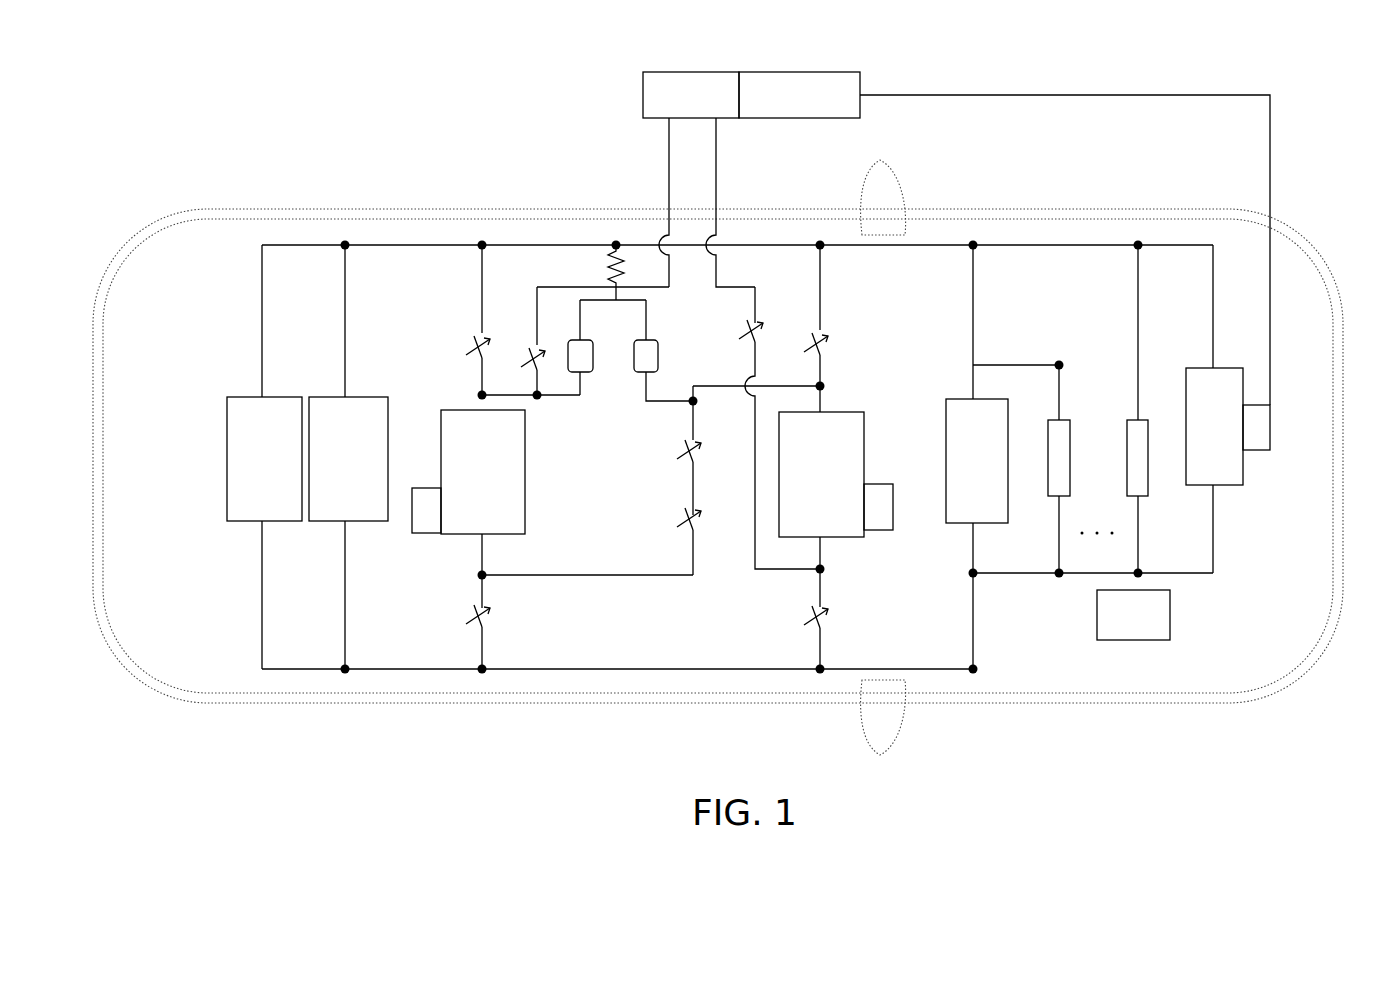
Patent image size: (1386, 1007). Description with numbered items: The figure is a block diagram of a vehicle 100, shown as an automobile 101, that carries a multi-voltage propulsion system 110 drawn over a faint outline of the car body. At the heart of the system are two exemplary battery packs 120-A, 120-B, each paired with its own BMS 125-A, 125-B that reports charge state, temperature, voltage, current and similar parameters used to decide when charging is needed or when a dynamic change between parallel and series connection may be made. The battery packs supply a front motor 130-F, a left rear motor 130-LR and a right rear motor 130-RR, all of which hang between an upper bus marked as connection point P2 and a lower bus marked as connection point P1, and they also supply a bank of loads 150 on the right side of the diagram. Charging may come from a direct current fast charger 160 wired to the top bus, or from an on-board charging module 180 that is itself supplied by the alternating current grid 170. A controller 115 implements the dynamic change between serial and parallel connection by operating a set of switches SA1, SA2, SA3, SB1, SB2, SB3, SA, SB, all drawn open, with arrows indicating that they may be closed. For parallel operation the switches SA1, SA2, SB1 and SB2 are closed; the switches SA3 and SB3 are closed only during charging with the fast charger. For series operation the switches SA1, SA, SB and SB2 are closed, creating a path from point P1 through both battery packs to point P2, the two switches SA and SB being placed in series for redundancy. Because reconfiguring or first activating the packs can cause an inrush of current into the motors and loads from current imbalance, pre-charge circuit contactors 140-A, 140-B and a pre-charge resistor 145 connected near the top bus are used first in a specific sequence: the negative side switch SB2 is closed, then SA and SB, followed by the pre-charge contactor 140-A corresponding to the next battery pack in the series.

The vehicle 100 is at (718, 457).
The automobile 101 is at (160, 680).
The multi-voltage propulsion system 110 is at (224, 211).
The controller 115 is at (1158, 632).
The battery pack 120-A is at (483, 472).
The battery pack 120-B is at (821, 474).
The BMS 125-A is at (425, 537).
The BMS 125-B is at (885, 530).
The left rear motor 130-LR is at (264, 457).
The right rear motor 130-RR is at (348, 457).
The front motor 130-F is at (977, 457).
The pre-charge circuit contactor 140-A is at (580, 363).
The pre-charge circuit contactor 140-B is at (646, 362).
The pre-charge resistor 145 is at (608, 268).
The loads 150 is at (1058, 480).
The direct current fast charger (DCFC) 160 is at (699, 179).
The alternating current (AC) grid 170 is at (1004, 238).
The on-board charging module (OBCM) 180 is at (1228, 409).
The connection point P1 is at (617, 691).
The connection point P2 is at (737, 227).
The switch SA is at (675, 536).
The switch SB is at (680, 449).
The switch SA1 is at (468, 320).
The switch SA2 is at (465, 601).
The switch SA3 is at (586, 341).
The switch SB1 is at (805, 328).
The switch SB2 is at (805, 603).
The switch SB3 is at (779, 428).